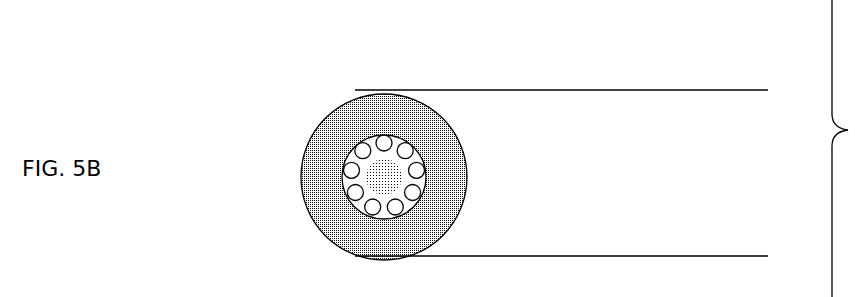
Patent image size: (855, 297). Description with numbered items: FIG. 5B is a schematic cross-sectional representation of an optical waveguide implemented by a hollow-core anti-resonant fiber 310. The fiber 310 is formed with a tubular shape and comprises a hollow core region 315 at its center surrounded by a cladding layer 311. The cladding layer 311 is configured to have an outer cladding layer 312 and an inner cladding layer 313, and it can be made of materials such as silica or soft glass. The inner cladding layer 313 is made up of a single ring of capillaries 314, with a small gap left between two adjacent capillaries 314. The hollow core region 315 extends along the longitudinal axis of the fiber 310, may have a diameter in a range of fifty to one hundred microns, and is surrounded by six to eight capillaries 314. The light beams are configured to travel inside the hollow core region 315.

The hollow-core anti-resonant fiber 310 is at (720, 78).
The cladding layer 311 is at (242, 44).
The outer cladding layer 312 is at (347, 132).
The inner cladding layer 313 is at (340, 150).
The capillaries 314 is at (350, 191).
The hollow core region 315 is at (400, 170).